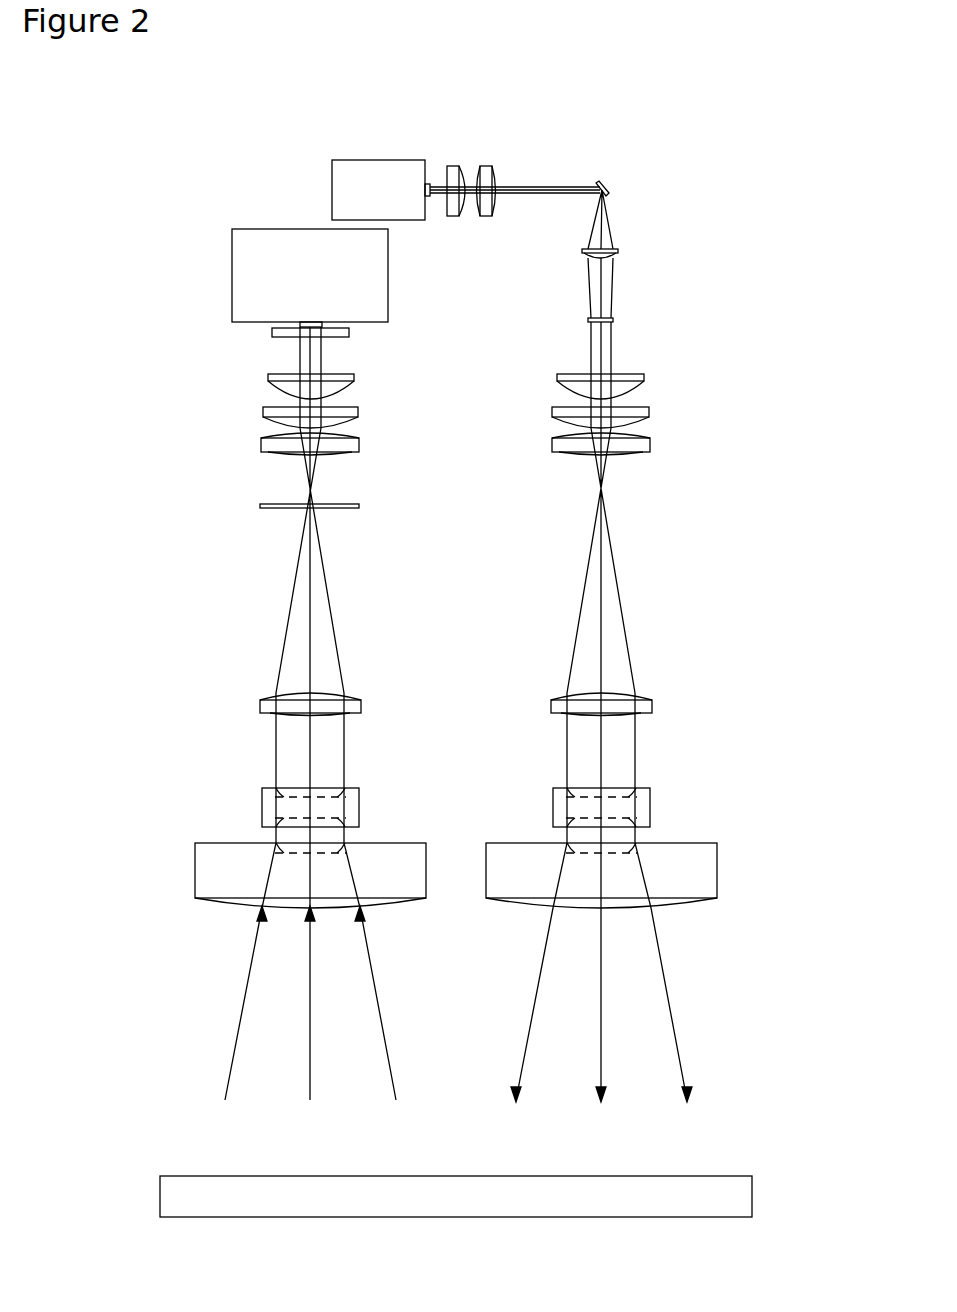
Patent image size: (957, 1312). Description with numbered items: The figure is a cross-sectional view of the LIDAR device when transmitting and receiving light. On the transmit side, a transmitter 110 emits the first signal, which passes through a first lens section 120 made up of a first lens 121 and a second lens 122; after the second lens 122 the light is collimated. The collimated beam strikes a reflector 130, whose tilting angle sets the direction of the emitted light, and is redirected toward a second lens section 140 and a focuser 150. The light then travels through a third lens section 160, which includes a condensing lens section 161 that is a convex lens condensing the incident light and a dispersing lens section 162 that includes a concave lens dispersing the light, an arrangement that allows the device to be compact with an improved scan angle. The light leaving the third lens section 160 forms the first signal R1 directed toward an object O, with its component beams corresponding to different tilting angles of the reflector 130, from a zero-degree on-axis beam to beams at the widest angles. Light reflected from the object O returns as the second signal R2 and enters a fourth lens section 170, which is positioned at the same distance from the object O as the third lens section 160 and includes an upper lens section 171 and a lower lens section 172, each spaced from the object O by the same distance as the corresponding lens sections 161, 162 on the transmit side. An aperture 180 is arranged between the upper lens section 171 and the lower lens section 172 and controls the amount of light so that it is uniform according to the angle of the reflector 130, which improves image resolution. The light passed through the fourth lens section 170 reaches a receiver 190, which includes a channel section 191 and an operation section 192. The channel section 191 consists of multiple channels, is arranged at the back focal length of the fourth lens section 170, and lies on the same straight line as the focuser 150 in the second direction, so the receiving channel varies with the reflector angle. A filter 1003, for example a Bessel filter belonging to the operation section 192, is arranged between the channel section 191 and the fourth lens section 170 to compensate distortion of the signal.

The transmitter 110 is at (357, 160).
The first lens section 120 is at (520, 117).
The 1-1 lens 121 is at (452, 166).
The 1-2 lens 122 is at (489, 166).
The reflector 130 is at (612, 189).
The second lens section 140 is at (618, 253).
The focuser 150 is at (613, 320).
The third lens section 160 is at (709, 394).
The 3-1 lens section 161 is at (655, 374).
The 3-2 lens section 162 is at (717, 693).
The fourth lens section 170 is at (208, 394).
The 4-1 lens section 171 is at (259, 374).
The 4-2 lens section 172 is at (197, 693).
The aperture 180 is at (359, 506).
The receiver 190 is at (163, 262).
The channel section 191 is at (300, 323).
The operation section 192 is at (232, 266).
The filter 1003 is at (349, 333).
The first signal R1 is at (712, 1135).
The second signal R2 is at (422, 1135).
The object O is at (752, 1196).